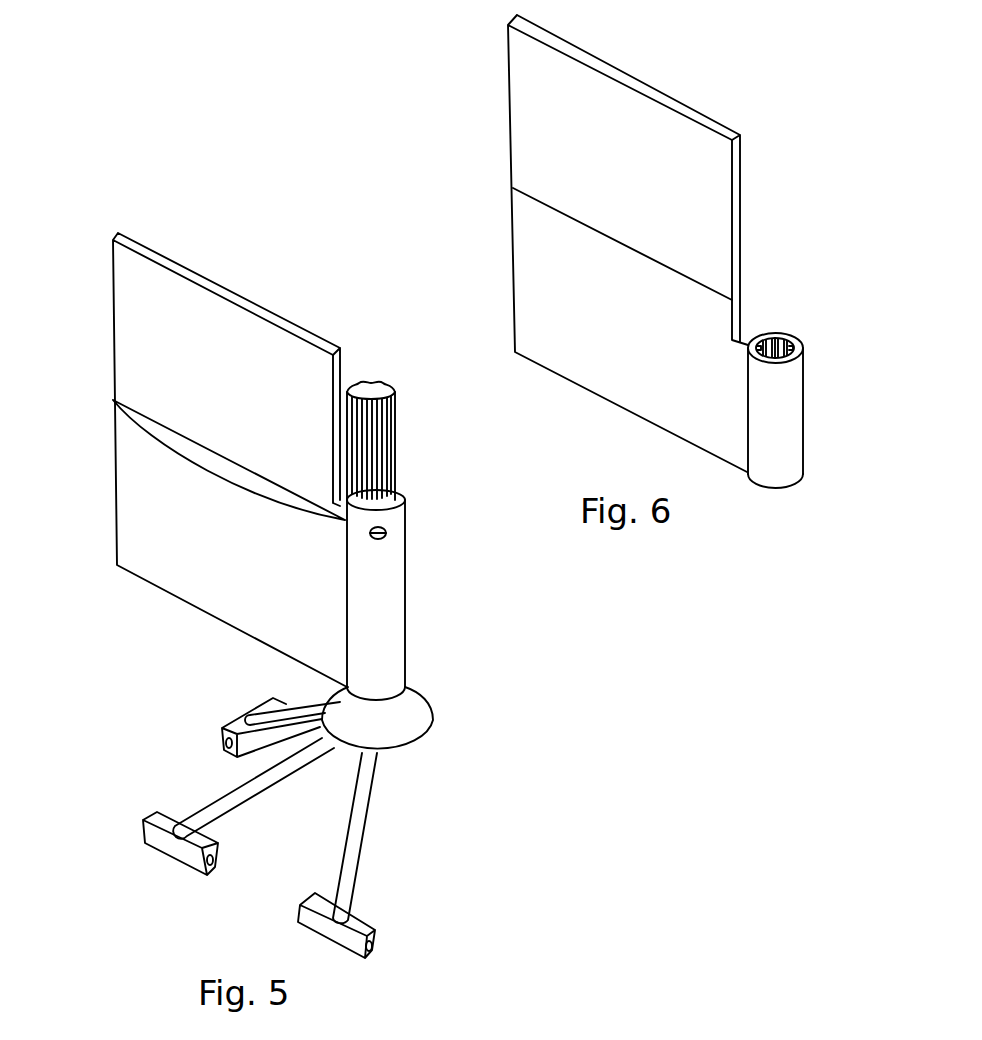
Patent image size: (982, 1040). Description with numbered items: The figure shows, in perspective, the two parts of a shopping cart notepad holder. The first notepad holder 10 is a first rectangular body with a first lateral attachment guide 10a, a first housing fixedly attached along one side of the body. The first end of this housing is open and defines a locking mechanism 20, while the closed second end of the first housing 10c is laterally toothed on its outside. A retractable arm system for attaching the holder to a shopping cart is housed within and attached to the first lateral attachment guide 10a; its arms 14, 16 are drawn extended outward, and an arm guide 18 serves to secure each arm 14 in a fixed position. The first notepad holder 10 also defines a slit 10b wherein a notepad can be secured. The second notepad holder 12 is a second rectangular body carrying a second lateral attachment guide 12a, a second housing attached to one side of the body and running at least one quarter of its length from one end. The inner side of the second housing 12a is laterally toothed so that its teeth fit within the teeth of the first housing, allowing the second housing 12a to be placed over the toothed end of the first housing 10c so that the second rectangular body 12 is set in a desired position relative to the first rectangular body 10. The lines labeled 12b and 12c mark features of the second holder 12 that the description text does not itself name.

In FIG. 5, the first notepad holder 10 is at (248, 407).
In FIG. 5, the first lateral attachment guide 10a is at (390, 634).
In FIG. 5, the slit 10b is at (165, 450).
In FIG. 5, the second end of the first housing 10c is at (383, 380).
In FIG. 5, the locking mechanism 20 is at (390, 533).
In FIG. 5, the arm guide 18 is at (408, 730).
In FIG. 5, the arm 14 is at (218, 800).
In FIG. 5, the arm 16 is at (370, 922).
In FIG. 6, the second notepad holder 12 is at (649, 192).
In FIG. 6, the second lateral attachment guide 12a is at (798, 453).
In FIG. 6, the fold line 12b is at (542, 198).
In FIG. 6, the splined bore 12c is at (770, 338).